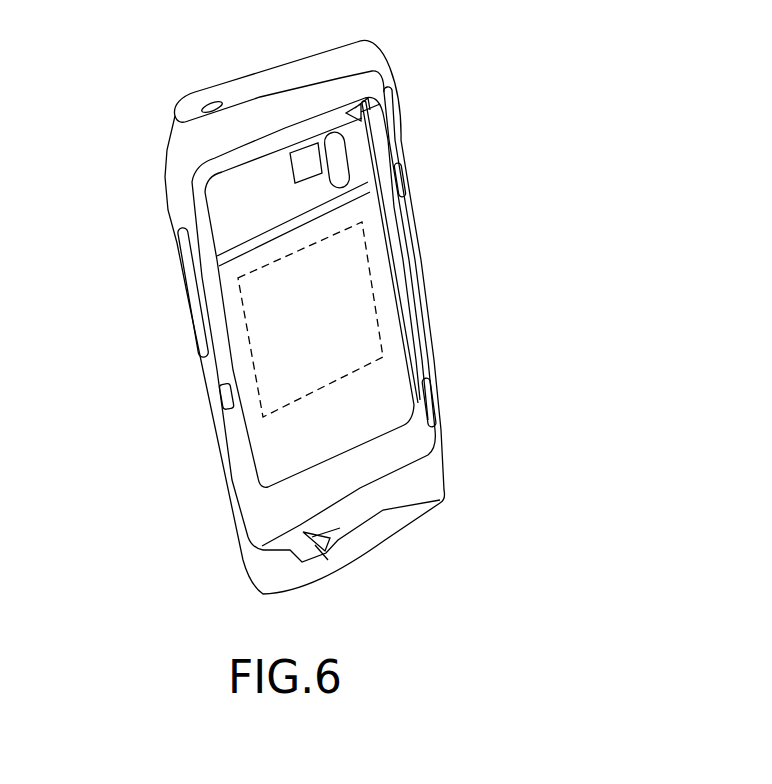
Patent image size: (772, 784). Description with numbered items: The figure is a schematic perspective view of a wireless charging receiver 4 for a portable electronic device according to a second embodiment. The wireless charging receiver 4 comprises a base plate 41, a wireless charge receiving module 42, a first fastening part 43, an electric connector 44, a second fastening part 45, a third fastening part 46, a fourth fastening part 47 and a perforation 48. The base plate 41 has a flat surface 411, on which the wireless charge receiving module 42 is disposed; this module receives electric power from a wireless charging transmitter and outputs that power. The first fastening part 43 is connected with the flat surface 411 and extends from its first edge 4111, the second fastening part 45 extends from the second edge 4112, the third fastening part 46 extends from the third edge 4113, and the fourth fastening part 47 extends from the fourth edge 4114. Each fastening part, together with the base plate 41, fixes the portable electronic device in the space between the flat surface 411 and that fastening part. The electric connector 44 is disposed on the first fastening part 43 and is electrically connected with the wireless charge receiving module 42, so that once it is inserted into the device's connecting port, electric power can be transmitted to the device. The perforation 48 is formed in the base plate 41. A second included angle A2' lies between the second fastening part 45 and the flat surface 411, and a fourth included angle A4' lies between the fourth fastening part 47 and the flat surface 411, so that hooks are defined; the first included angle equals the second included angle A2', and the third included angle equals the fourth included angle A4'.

The wireless charging receiver 4 is at (88, 86).
The base plate 41 is at (418, 405).
The flat surface 411 is at (393, 342).
The first edge 4111 is at (236, 322).
The second edge 4112 is at (385, 292).
The third edge 4113 is at (348, 177).
The fourth edge 4114 is at (380, 460).
The wireless charge receiving module 42 is at (353, 262).
The first fastening part 43 is at (230, 480).
The electric connector 44 is at (223, 400).
The second fastening part 45 is at (428, 442).
The third fastening part 46 is at (330, 90).
The fourth fastening part 47 is at (367, 527).
The perforation 48 is at (302, 163).
The second included angle A2' is at (394, 95).
The fourth included angle A4' is at (286, 578).